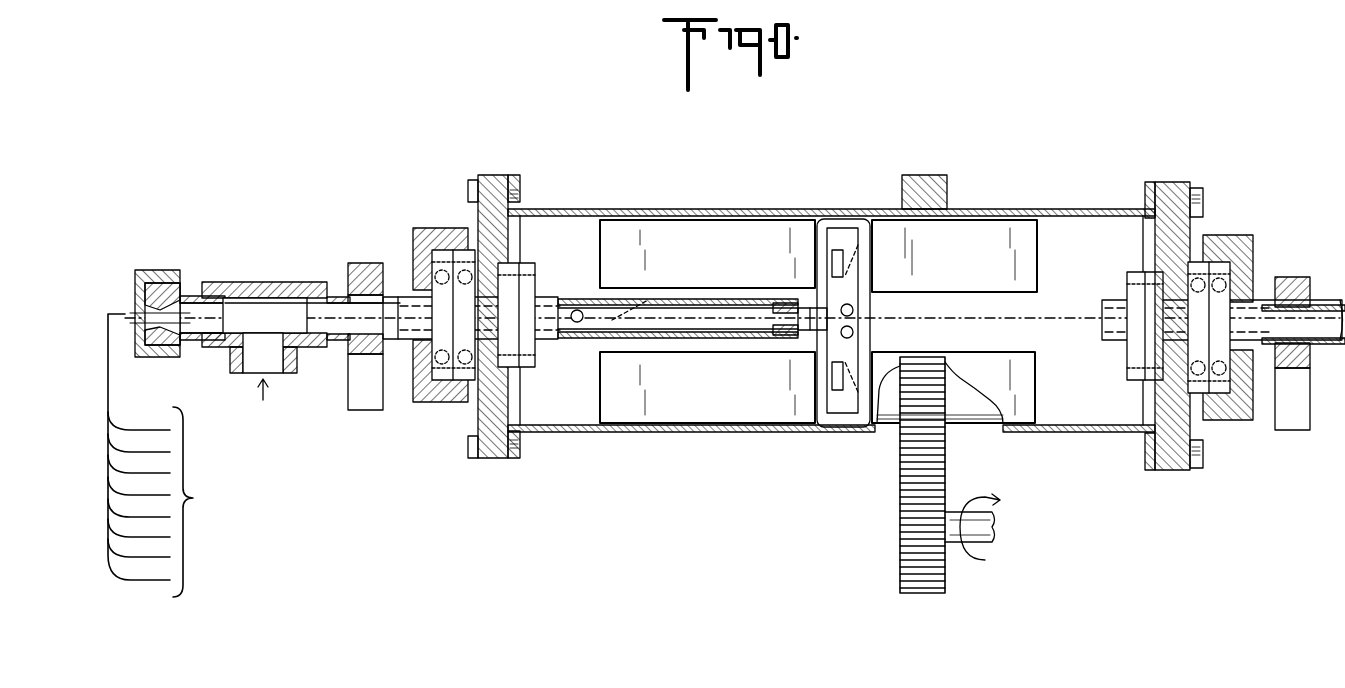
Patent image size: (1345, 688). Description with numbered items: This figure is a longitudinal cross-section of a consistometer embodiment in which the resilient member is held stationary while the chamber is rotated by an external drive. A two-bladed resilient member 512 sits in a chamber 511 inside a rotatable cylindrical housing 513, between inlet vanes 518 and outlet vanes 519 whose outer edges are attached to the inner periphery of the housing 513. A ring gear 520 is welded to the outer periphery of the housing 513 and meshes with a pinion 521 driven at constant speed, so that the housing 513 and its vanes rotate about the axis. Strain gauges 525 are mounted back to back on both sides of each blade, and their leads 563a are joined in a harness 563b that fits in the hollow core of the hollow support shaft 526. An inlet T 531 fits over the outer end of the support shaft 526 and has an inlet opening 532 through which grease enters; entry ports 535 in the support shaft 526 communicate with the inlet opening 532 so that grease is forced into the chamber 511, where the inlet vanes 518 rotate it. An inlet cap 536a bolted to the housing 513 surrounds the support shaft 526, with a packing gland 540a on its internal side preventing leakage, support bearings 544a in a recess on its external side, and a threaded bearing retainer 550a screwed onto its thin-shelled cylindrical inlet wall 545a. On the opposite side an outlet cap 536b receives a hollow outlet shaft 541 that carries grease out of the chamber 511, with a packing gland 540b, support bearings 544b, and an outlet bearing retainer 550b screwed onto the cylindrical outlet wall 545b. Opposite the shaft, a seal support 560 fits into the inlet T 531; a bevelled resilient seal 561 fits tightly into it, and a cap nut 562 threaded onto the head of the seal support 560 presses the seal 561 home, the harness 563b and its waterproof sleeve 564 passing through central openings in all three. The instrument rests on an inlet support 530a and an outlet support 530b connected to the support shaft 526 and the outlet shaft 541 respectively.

The chamber 511 is at (858, 232).
The resilient member 512 is at (852, 410).
The cylindrical housing 513 is at (694, 432).
The inlet vanes 518 is at (715, 248).
The outlet vanes 519 is at (957, 250).
The ring gear 520 is at (947, 190).
The pinion 521 is at (900, 498).
The strain gauges 525 is at (845, 262).
The hollow support shaft 526 is at (764, 300).
The inlet support 530a is at (385, 250).
The outlet support 530b is at (1308, 272).
The inlet T 531 is at (278, 282).
The inlet opening 532 is at (278, 370).
The entry ports 535 is at (575, 308).
The inlet cap 536a is at (498, 178).
The outlet cap 536b is at (1175, 182).
The packing gland 540a is at (525, 265).
The packing gland 540b is at (1138, 272).
The hollow outlet shaft 541 is at (1112, 342).
The support bearings 544a is at (440, 262).
The support bearings 544b is at (1226, 268).
The cylindrical inlet wall 545a is at (456, 252).
The cylindrical outlet wall 545b is at (1218, 260).
The bearing retainer 550a is at (456, 405).
The outlet bearing retainer 550b is at (1222, 420).
The seal support 560 is at (212, 296).
The seal 561 is at (176, 290).
The cap nut 562 is at (152, 270).
The strain gauge electrical leads 563a is at (855, 285).
The harness 563b is at (110, 400).
The waterproof sleeve 564 is at (664, 336).